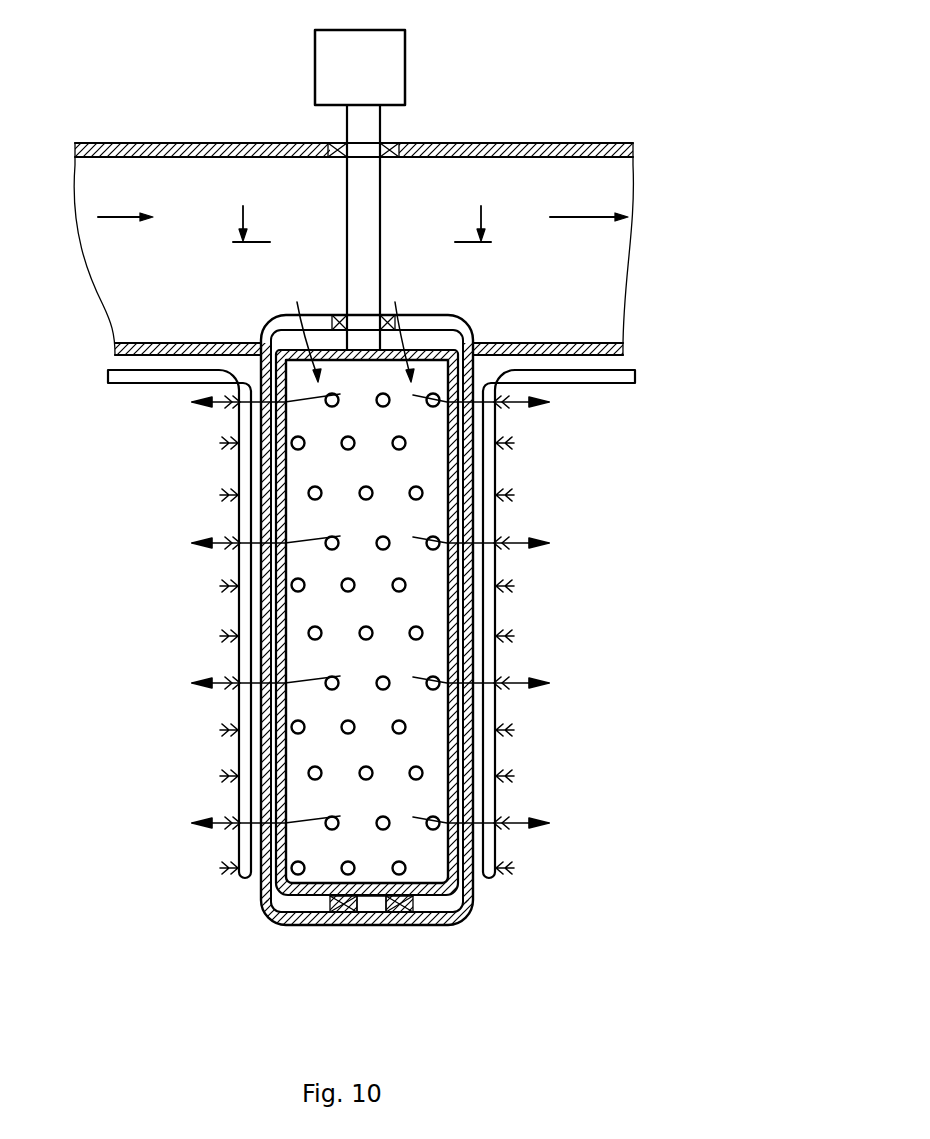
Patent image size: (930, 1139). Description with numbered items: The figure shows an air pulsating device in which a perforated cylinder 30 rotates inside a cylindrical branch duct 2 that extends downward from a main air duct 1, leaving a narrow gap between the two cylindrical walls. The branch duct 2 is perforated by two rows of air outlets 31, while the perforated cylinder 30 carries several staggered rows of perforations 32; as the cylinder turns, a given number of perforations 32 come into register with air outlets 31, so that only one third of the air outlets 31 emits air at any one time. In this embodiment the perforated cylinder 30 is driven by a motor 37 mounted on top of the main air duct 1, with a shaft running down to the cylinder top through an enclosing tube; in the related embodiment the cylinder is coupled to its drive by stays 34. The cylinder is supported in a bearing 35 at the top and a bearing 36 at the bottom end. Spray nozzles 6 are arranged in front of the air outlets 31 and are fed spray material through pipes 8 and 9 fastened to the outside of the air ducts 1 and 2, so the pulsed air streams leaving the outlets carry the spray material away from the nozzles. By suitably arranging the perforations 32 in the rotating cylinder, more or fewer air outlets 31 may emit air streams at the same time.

The main air duct 1 is at (521, 166).
The cylindrical branch duct 2 is at (269, 900).
The spray nozzles 6 is at (517, 500).
The pipe 8 is at (246, 610).
The pipe 9 is at (168, 377).
The perforated cylinder 30 is at (474, 902).
The air outlets 31 is at (475, 774).
The perforations 32 is at (318, 770).
The stays 34 is at (421, 383).
The bearing 35 is at (335, 313).
The bearing 36 is at (350, 912).
The motor 37 is at (383, 60).